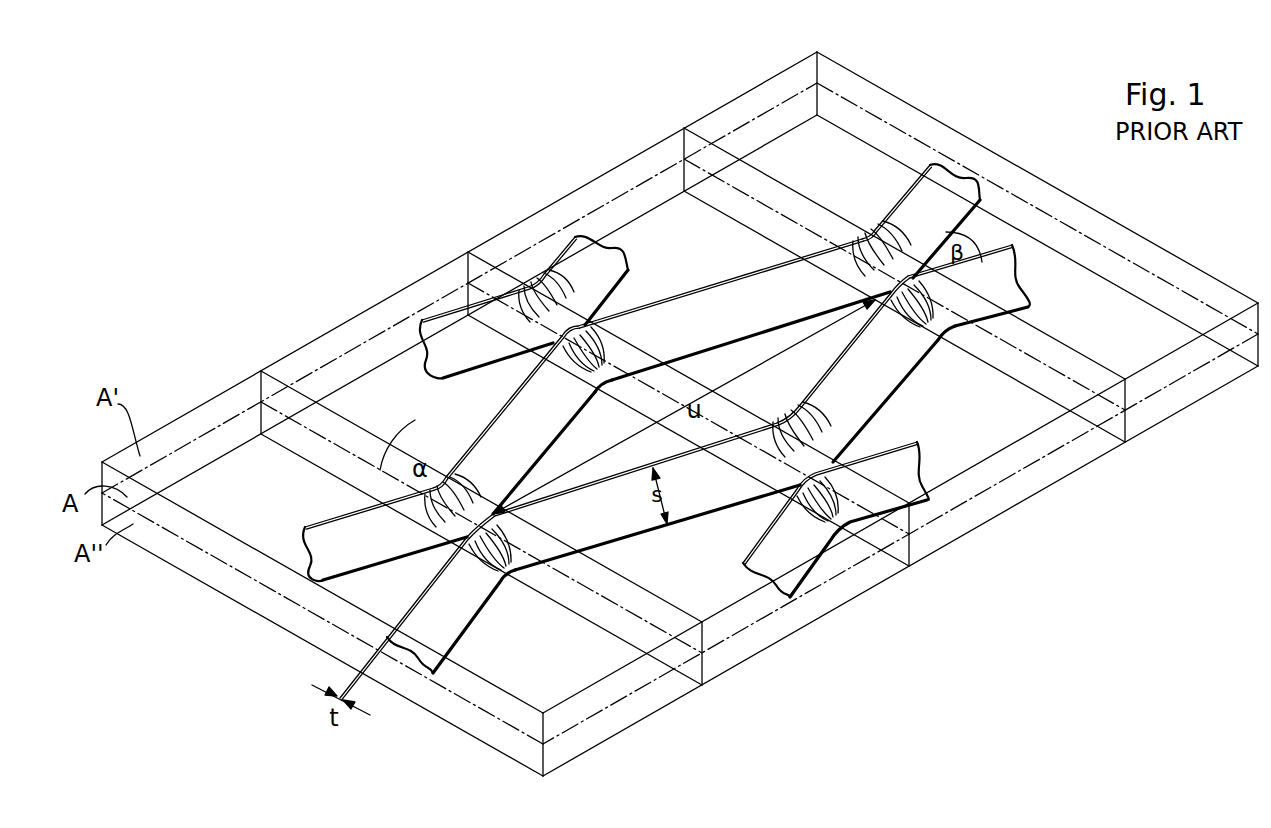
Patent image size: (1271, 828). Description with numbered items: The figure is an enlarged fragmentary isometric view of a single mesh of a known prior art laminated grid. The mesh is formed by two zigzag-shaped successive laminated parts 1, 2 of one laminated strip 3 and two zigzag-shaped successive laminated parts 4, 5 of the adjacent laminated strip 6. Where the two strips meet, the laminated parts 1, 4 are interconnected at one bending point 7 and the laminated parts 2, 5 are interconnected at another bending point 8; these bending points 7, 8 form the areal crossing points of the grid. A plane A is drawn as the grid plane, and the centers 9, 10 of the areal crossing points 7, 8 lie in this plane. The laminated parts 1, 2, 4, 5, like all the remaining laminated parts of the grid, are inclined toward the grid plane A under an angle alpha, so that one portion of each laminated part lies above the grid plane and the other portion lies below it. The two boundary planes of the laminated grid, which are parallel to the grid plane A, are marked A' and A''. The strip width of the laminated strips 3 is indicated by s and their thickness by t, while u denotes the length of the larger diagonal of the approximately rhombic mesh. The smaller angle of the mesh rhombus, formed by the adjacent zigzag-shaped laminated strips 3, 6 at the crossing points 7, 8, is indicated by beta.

The laminated part 1 is at (500, 446).
The laminated part 2 is at (587, 323).
The laminated strip 3 is at (953, 170).
The laminated part 4 is at (608, 519).
The laminated part 5 is at (873, 383).
The laminated strip 6 is at (1040, 271).
The bending point 7 is at (473, 554).
The bending point 8 is at (903, 260).
The center of areal crossing point 9 is at (415, 418).
The center of areal crossing point 10 is at (855, 230).